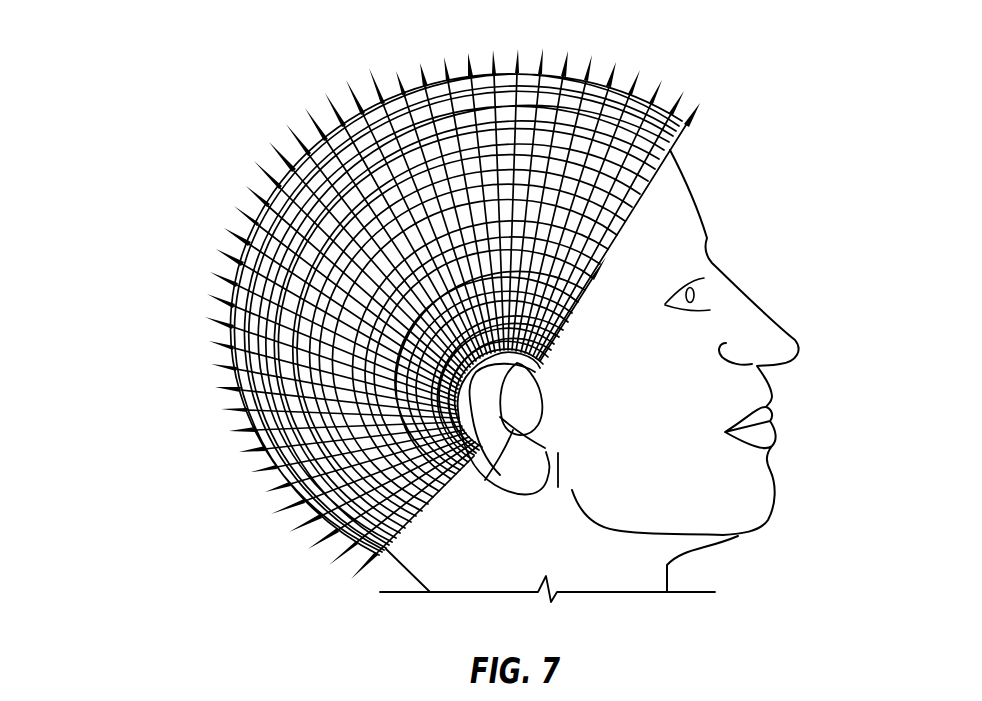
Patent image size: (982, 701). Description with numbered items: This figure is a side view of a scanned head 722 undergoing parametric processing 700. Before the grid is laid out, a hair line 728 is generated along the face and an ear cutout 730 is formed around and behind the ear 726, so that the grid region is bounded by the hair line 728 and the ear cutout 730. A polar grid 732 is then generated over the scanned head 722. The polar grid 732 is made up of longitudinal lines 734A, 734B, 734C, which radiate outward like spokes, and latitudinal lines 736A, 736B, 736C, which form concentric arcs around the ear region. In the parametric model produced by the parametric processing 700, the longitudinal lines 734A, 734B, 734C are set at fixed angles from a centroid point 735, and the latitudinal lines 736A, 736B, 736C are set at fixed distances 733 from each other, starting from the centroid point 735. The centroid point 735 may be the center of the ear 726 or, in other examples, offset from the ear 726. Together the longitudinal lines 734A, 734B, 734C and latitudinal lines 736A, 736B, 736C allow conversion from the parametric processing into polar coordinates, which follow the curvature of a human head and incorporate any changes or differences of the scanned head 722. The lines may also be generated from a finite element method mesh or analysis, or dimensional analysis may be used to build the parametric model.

The parametric processing 700 is at (228, 63).
The scanned head 722 is at (604, 558).
The ear 726 is at (499, 393).
The hair line 728 is at (649, 197).
The ear cutout 730 is at (517, 363).
The polar grid 732 is at (263, 137).
The fixed distances 733 is at (353, 264).
The longitudinal line 734A is at (674, 137).
The longitudinal line 734B is at (658, 112).
The longitudinal line 734C is at (640, 92).
The centroid point 735 is at (515, 432).
The latitudinal line 736A is at (548, 366).
The latitudinal line 736B is at (551, 358).
The latitudinal line 736C is at (548, 352).